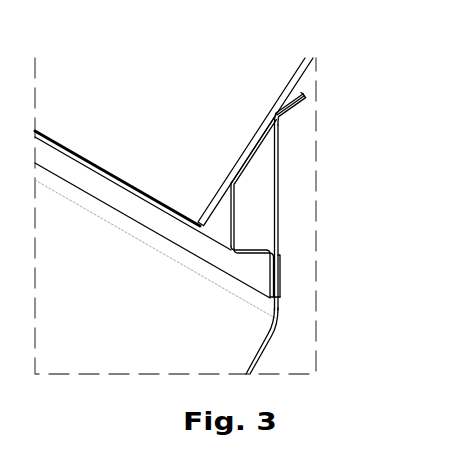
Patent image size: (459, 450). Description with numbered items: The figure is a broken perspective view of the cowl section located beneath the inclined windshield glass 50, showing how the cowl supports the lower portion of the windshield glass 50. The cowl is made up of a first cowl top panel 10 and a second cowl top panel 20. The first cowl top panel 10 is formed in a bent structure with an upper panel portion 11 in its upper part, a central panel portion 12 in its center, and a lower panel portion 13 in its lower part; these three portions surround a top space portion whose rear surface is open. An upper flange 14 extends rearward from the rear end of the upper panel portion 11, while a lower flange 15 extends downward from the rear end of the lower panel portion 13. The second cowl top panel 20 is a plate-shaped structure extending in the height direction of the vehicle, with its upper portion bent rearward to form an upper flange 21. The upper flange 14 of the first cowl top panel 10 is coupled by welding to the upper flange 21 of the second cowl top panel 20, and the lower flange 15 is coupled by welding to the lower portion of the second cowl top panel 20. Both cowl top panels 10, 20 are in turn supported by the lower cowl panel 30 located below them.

The first cowl top panel 10 is at (170, 218).
The upper panel portion 11 is at (251, 153).
The central panel portion 12 is at (222, 230).
The lower panel portion 13 is at (249, 256).
The upper flange 14 is at (296, 93).
The lower flange 15 is at (269, 278).
The second cowl top panel 20 is at (280, 222).
The upper flange 21 is at (293, 110).
The lower cowl panel 30 is at (274, 330).
The windshield glass 50 is at (178, 107).